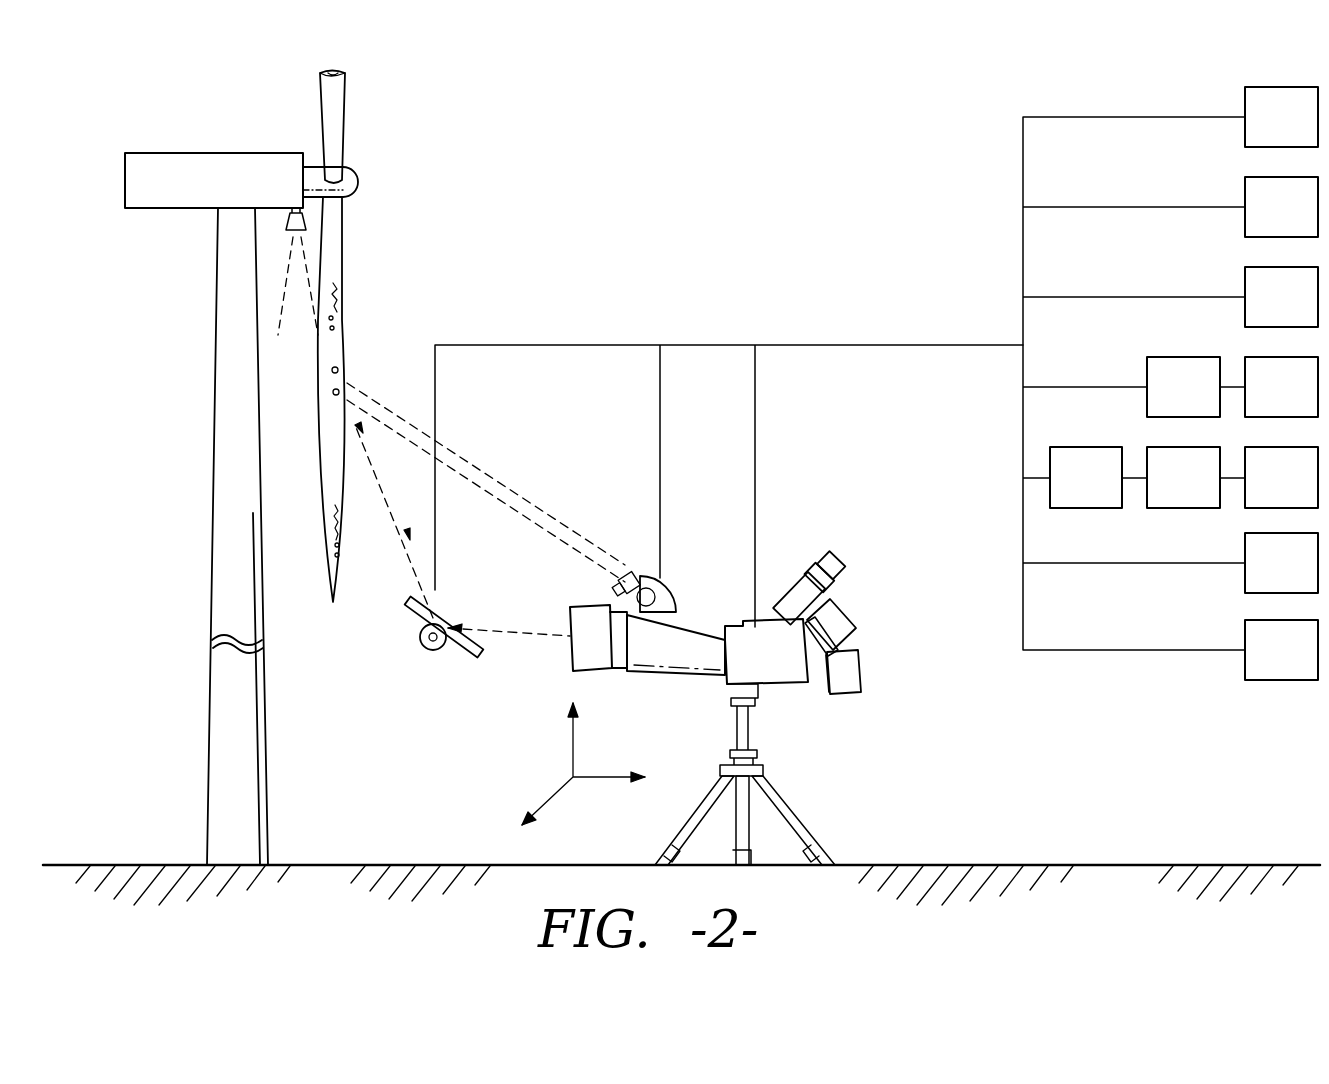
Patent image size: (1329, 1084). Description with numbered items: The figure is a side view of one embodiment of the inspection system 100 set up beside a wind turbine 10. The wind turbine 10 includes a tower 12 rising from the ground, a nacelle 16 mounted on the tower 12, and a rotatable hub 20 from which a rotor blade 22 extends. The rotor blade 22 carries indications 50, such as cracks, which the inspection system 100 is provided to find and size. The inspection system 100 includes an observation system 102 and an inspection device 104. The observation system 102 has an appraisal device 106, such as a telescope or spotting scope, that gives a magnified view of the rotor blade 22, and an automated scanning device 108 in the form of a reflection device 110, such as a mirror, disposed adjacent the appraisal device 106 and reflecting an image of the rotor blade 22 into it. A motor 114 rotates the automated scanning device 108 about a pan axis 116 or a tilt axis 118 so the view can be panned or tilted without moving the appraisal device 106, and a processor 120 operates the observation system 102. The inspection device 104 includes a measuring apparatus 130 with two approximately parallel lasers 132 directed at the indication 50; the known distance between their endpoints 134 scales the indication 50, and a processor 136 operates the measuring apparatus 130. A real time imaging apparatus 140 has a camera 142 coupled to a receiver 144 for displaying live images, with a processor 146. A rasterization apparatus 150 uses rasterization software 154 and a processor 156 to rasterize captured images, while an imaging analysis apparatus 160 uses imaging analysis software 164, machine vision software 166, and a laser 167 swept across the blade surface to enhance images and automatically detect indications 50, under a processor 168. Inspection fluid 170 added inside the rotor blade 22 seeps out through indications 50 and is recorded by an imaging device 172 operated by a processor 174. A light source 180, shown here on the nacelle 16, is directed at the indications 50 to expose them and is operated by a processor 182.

The wind turbine 10 is at (190, 134).
The tower 12 is at (218, 750).
The nacelle 16 is at (218, 153).
The hub 20 is at (360, 186).
The rotor blade 22 is at (343, 110).
The indication 50 is at (340, 292).
The inspection system 100 is at (794, 496).
The observation system 102 is at (698, 700).
The inspection device 104 is at (990, 218).
The appraisal device 106 is at (690, 632).
The automated scanning device 108 is at (434, 655).
The reflection device 110 is at (470, 653).
The motor 114 is at (419, 617).
The pan axis 116 is at (572, 745).
The tilt axis 118 is at (560, 790).
The processor 120 is at (1304, 132).
The measuring apparatus 130 is at (673, 578).
The laser 132 is at (608, 598).
The endpoints 134 is at (338, 368).
The processor 136 is at (1304, 222).
The real time imaging apparatus 140 is at (863, 662).
The camera 142 is at (808, 675).
The receiver 144 is at (848, 682).
The processor 146 is at (1304, 312).
The rasterization apparatus 150 is at (1118, 406).
The rasterization software 154 is at (1206, 402).
The processor 156 is at (1304, 402).
The imaging analysis apparatus 160 is at (1118, 499).
The imaging analysis software 164 is at (1108, 493).
The machine vision software 166 is at (1206, 493).
The laser 167 is at (638, 575).
The processor 168 is at (1304, 493).
The inspection fluid 170 is at (338, 306).
The imaging device 172 is at (842, 617).
The processor 174 is at (1304, 578).
The light source 180 is at (295, 217).
The processor 182 is at (1304, 665).